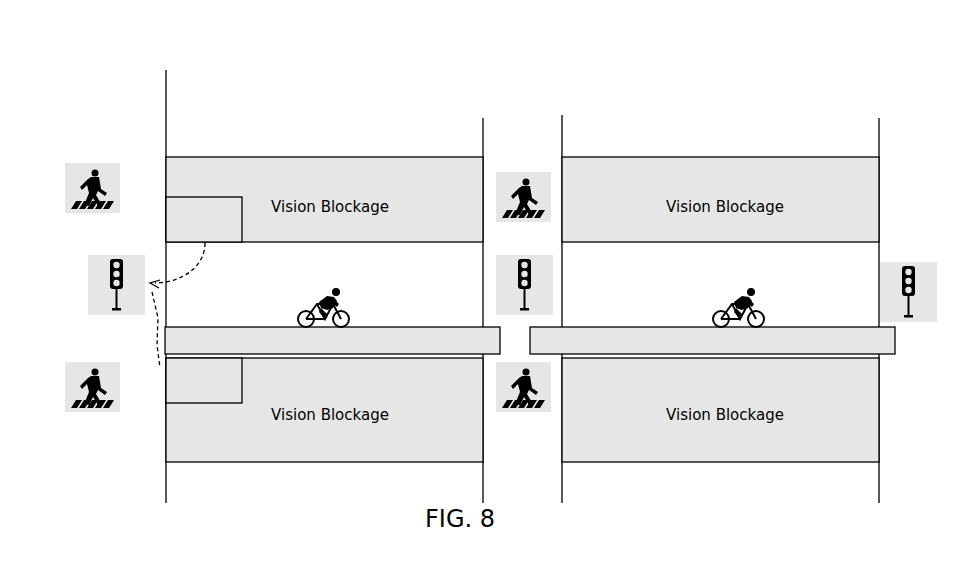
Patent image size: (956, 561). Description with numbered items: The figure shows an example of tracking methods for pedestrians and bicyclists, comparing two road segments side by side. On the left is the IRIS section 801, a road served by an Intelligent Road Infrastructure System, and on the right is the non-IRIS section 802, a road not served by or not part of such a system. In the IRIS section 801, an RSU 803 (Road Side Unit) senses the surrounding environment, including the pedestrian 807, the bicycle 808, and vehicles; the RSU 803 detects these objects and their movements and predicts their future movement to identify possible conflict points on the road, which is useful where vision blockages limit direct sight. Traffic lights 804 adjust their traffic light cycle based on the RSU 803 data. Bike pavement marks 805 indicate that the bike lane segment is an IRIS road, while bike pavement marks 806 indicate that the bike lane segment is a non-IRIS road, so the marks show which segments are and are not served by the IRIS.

The IRIS section 801 is at (518, 98).
The non-IRIS section 802 is at (922, 98).
The RSU 803 is at (196, 300).
The traffic light 804 is at (474, 296).
The bike pavement marks (IRIS) 805 is at (332, 340).
The bike pavement marks (non-IRIS) 806 is at (712, 340).
The pedestrian 807 is at (283, 287).
The bicycle 808 is at (531, 307).